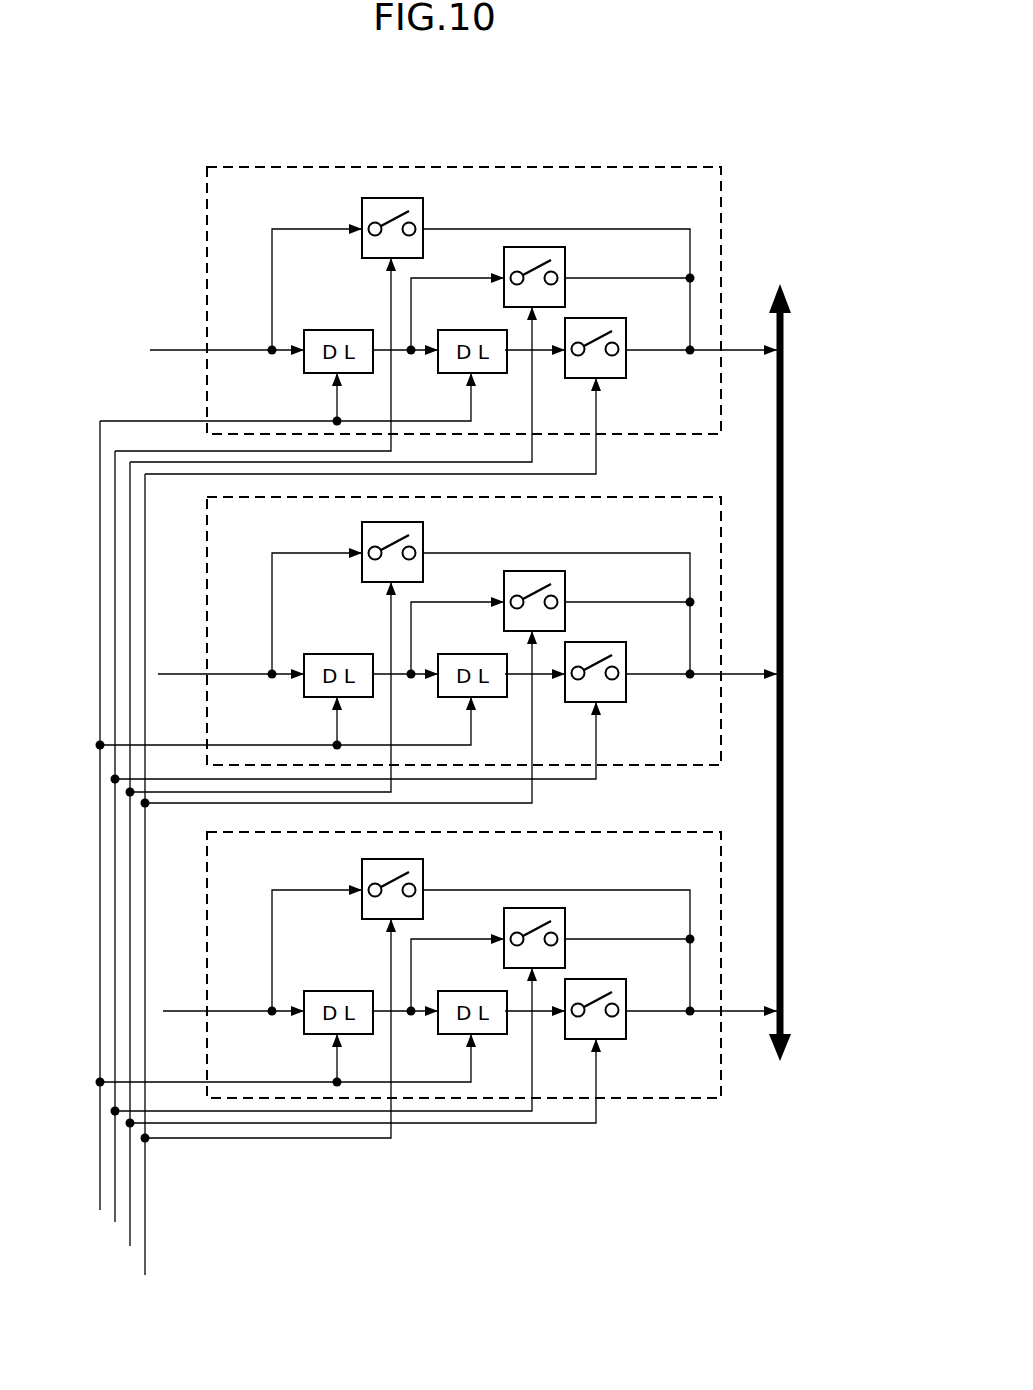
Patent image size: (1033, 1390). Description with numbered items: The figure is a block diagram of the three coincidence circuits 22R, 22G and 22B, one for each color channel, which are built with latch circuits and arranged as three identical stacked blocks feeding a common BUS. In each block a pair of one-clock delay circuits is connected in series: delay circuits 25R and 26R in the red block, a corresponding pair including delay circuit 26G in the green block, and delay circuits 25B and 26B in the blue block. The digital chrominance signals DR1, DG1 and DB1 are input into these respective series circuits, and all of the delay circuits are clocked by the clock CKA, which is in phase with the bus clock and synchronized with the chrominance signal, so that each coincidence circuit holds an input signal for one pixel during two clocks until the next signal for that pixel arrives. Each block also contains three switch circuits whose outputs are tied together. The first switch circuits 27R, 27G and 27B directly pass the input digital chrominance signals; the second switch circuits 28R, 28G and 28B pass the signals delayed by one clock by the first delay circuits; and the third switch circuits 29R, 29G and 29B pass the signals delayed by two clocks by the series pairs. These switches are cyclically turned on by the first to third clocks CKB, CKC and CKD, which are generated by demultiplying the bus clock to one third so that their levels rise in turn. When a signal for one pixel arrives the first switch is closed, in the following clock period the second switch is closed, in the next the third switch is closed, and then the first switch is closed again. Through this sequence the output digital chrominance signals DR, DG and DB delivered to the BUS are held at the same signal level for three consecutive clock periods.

The coincidence circuit 22R is at (630, 165).
The coincidence circuit 22G is at (488, 599).
The coincidence circuit 22B is at (481, 943).
The one-clock delay circuit 25R is at (338, 328).
The one-clock delay circuit 25B is at (338, 980).
The one-clock delay circuit 26R is at (457, 330).
The one-clock delay circuit 26G is at (466, 652).
The one-clock delay circuit 26B is at (466, 990).
The first switch circuit 27R is at (404, 196).
The first switch circuit 27G is at (437, 545).
The first switch circuit 27B is at (440, 882).
The second switch circuit 28R is at (560, 252).
The second switch circuit 28G is at (572, 595).
The second switch circuit 28B is at (577, 938).
The third switch circuit 29R is at (592, 318).
The third switch circuit 29G is at (621, 657).
The third switch circuit 29B is at (620, 996).
The digital chrominance signal DR1 is at (178, 348).
The digital chrominance signal DG1 is at (228, 647).
The digital chrominance signal DB1 is at (228, 979).
The digital chrominance signal DR is at (743, 346).
The digital chrominance signal DG is at (702, 639).
The digital chrominance signal DB is at (702, 975).
The bus BUS is at (781, 955).
The clock CKA is at (100, 1150).
The first clock CKB is at (115, 1185).
The second clock CKC is at (130, 1225).
The third clock CKD is at (145, 1262).